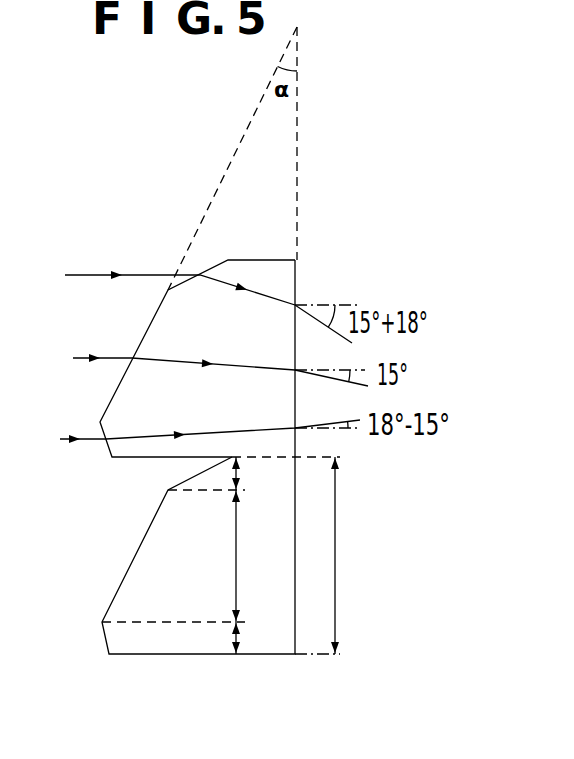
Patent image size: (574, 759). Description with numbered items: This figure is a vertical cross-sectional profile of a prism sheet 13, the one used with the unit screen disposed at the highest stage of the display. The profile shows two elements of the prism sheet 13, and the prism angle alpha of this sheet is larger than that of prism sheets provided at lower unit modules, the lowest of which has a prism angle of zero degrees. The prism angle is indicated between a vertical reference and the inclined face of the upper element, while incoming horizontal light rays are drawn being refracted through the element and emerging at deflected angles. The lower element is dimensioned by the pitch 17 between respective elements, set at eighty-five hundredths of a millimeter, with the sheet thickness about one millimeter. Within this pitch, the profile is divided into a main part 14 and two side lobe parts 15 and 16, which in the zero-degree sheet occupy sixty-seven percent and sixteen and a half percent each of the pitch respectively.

The prism 13 is at (273, 259).
The main part 14 is at (256, 556).
The side lobe part 15 is at (254, 473).
The side lobe part 16 is at (191, 639).
The pitch 17 is at (336, 555).